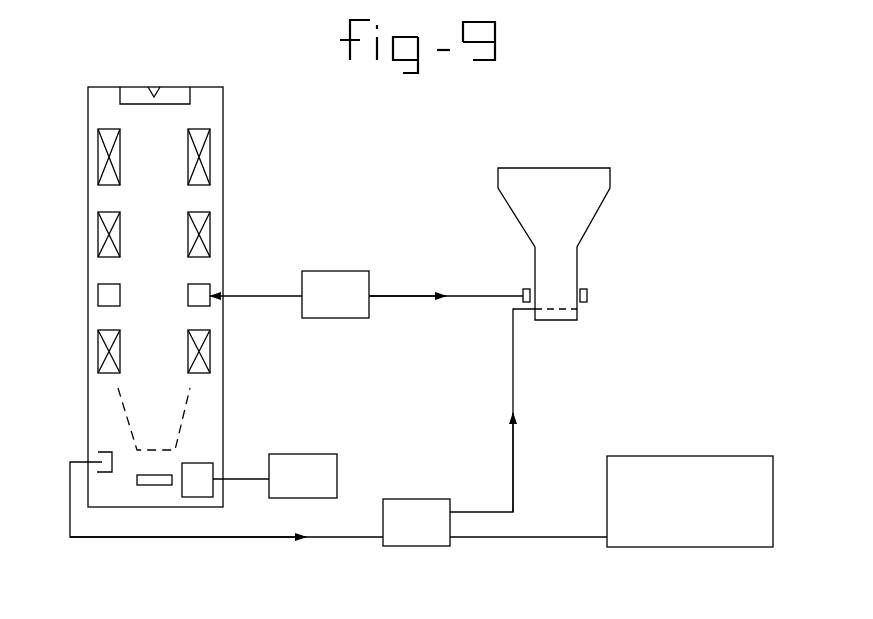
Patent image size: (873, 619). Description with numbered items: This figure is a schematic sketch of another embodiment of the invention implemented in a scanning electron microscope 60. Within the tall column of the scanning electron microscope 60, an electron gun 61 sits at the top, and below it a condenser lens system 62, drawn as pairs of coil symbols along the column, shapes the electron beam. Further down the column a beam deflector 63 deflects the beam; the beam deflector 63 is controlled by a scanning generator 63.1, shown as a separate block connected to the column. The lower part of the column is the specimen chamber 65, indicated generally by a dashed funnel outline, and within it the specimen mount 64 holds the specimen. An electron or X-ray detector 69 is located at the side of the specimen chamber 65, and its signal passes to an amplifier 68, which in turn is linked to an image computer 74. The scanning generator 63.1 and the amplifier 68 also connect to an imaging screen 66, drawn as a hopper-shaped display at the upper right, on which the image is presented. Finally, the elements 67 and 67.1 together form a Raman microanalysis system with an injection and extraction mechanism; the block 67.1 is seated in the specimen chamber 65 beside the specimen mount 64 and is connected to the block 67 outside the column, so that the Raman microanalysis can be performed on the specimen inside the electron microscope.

The scanning electron microscope 60 is at (88, 195).
The electron gun 61 is at (192, 87).
The condenser lens system 62 is at (205, 165).
The beam deflector 63 is at (106, 290).
The scanning generator 63.1 is at (358, 283).
The specimen mount 64 is at (148, 483).
The specimen chamber 65 is at (195, 438).
The imaging screen 66 is at (590, 203).
The Raman microanalysis system 67 is at (330, 467).
The injection and extraction mechanism 67.1 is at (207, 490).
The amplifier 68 is at (423, 512).
The electron or X-ray detector 69 is at (104, 452).
The image computer 74 is at (768, 478).